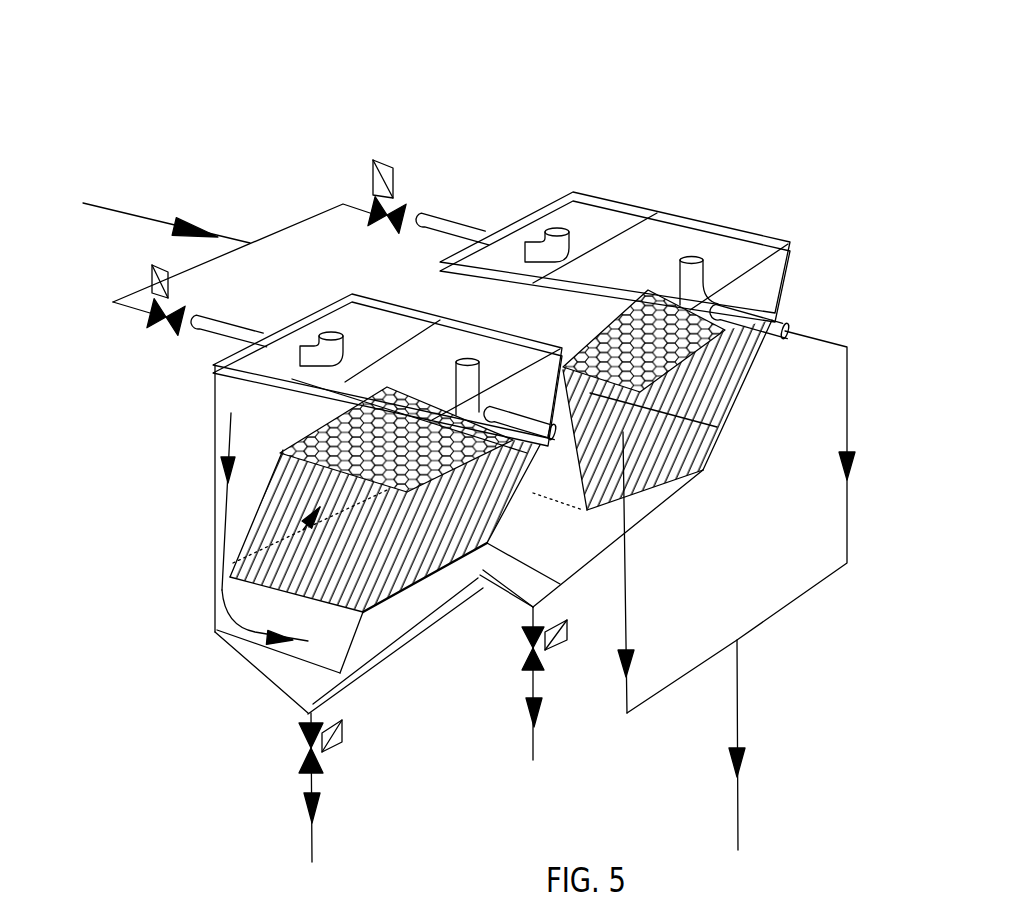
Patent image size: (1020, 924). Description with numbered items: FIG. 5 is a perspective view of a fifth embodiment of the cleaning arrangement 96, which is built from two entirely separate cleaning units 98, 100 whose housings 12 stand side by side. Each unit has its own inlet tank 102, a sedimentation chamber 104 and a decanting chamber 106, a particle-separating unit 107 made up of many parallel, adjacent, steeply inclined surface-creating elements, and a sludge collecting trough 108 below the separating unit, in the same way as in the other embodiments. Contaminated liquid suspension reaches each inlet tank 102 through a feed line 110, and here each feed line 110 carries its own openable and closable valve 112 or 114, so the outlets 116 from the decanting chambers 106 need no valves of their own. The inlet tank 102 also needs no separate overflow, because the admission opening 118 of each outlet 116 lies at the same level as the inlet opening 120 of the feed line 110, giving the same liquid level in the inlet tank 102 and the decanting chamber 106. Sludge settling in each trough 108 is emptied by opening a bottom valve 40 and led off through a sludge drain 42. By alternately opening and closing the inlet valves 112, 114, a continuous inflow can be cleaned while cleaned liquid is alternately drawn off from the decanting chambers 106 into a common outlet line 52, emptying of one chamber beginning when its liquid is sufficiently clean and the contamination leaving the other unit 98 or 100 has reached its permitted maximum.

The housing 12 is at (393, 618).
The bottom valve 40 is at (343, 743).
The sludge drain 42 is at (313, 833).
The common outlet line 52 is at (738, 803).
The arrangement 96 is at (468, 152).
The cleaning unit 98 is at (215, 408).
The cleaning unit 100 is at (780, 287).
The inlet tank 102 is at (355, 323).
The sedimentation chamber 104 is at (287, 530).
The decanting chamber 106 is at (420, 373).
The particle-separating unit 107 is at (447, 385).
The sludge collecting trough 108 is at (297, 680).
The feed line 110 is at (313, 216).
The valve 112 is at (172, 288).
The valve 114 is at (383, 160).
The outlet 116 is at (757, 317).
The admission opening 118 is at (468, 358).
The inlet opening 120 is at (333, 332).